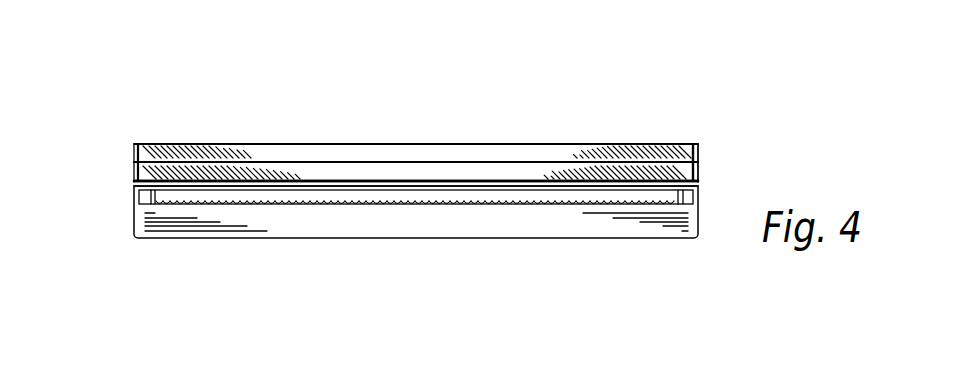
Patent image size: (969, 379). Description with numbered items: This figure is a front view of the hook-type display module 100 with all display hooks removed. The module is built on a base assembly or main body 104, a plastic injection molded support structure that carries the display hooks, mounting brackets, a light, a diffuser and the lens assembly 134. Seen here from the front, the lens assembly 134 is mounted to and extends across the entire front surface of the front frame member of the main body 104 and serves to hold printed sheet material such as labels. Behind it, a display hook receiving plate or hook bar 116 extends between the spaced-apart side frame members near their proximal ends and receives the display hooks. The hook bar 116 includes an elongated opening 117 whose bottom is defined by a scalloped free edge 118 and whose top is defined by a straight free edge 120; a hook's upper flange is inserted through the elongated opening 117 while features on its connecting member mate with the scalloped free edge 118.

The hook-type display module 100 is at (641, 98).
The base assembly or main body 104 is at (126, 164).
The display hook receiving plate or hook bar 116 is at (483, 243).
The elongated opening 117 is at (316, 180).
The scalloped free edge 118 is at (464, 203).
The straight free edge 120 is at (592, 191).
The lens assembly 134 is at (706, 153).